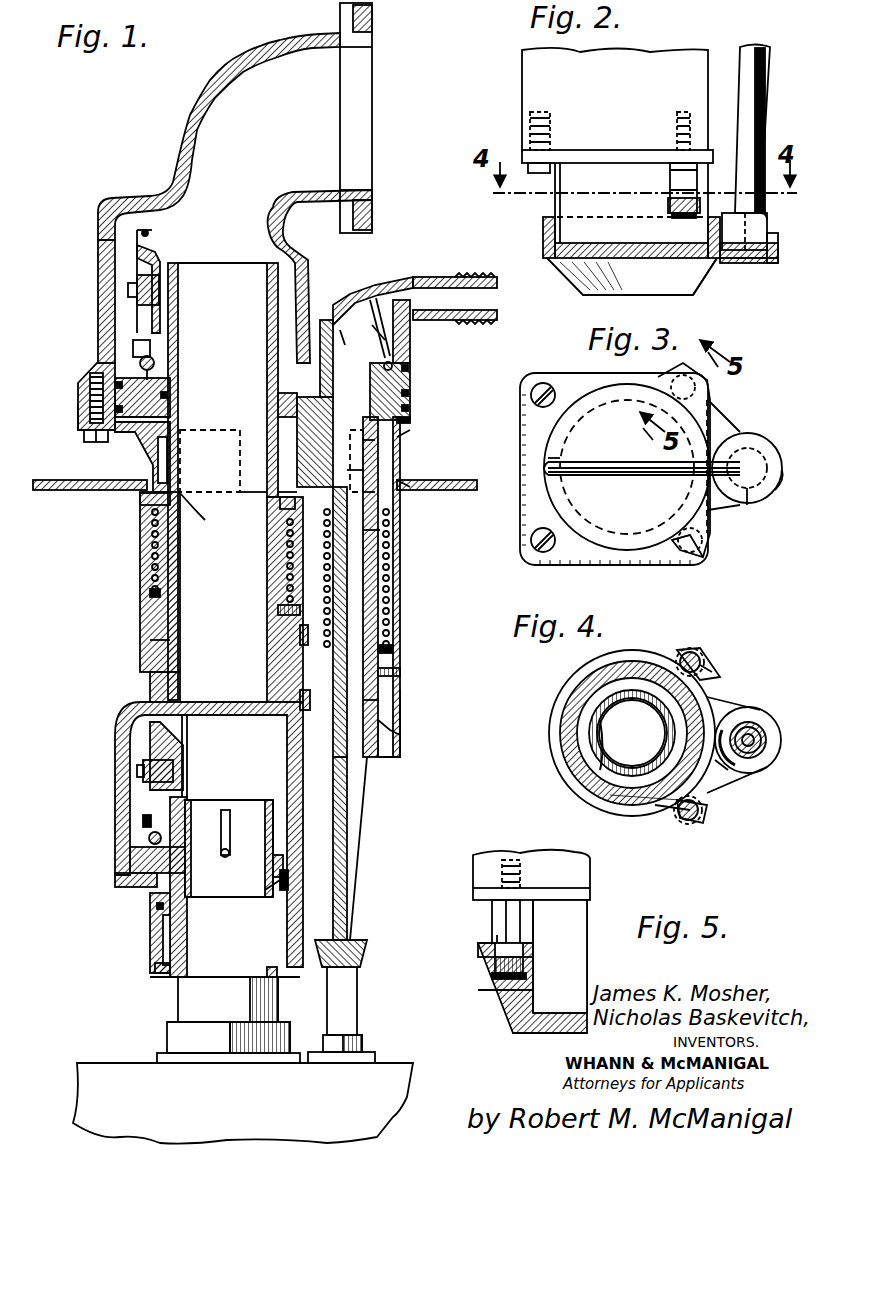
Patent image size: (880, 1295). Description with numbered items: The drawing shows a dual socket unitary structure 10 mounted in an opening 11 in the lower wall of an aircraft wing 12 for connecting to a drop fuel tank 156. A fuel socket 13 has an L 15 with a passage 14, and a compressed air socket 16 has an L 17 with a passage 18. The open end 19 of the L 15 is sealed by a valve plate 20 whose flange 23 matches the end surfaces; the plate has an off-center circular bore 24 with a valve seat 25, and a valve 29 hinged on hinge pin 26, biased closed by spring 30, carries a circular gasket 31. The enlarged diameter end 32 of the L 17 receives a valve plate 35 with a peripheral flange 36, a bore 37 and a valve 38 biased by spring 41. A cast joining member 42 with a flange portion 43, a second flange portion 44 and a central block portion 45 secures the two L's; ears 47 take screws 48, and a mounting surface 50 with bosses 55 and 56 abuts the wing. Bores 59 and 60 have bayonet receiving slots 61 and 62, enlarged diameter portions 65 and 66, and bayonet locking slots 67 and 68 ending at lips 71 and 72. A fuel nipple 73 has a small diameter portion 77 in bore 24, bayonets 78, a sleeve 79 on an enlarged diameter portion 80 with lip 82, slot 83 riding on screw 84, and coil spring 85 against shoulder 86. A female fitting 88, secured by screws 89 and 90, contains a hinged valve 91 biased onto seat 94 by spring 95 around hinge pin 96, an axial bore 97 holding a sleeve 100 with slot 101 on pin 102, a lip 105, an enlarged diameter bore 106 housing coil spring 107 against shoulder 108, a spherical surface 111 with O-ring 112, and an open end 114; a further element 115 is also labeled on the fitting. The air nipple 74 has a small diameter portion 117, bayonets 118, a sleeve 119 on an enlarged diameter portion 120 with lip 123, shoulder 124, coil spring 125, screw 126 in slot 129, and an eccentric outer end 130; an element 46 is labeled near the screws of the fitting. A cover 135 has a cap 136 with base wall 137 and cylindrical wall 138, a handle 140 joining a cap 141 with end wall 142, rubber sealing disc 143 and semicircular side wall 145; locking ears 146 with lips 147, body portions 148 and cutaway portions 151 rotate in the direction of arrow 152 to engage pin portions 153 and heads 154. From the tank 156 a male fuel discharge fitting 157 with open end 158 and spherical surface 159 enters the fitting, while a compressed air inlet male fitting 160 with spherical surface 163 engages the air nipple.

In FIG. 1, the unitary structure 10 is at (365, 258).
In FIG. 1, the opening 11 is at (365, 470).
In FIG. 1, the aircraft wing 12 is at (458, 479).
In FIG. 1, the fuel socket 13 is at (133, 443).
In FIG. 1, the passage 14 is at (363, 110).
In FIG. 1, the L 15 is at (200, 110).
In FIG. 1, the compressed air socket 16 is at (435, 408).
In FIG. 1, the L 17 is at (413, 277).
In FIG. 1, the passage 18 is at (483, 303).
In FIG. 1, the open end 19 is at (83, 380).
In FIG. 1, the valve plate 20 is at (168, 398).
In FIG. 1, the flange 23 is at (88, 393).
In FIG. 1, the circular bore 24 is at (150, 385).
In FIG. 1, the valve seat 25 is at (273, 347).
In FIG. 1, the hinge pin 26 is at (152, 360).
In FIG. 1, the valve 29 is at (163, 267).
In FIG. 1, the spring 30 is at (133, 347).
In FIG. 1, the circular gasket 31 is at (148, 233).
In FIG. 1, the enlarged diameter end 32 is at (408, 368).
In FIG. 1, the valve plate 35 is at (410, 408).
In FIG. 1, the peripheral flange 36 is at (410, 393).
In FIG. 1, the bore 37 is at (388, 362).
In FIG. 1, the valve 38 is at (375, 325).
In FIG. 1, the spring 41 is at (392, 368).
In FIG. 1, the joining member 42 is at (78, 418).
In FIG. 1, the flange portion 43 is at (140, 433).
In FIG. 1, the second flange portion 44 is at (412, 434).
In FIG. 1, the central block portion 45 is at (300, 453).
In FIG. 2, the bolt 46 is at (690, 160).
In FIG. 1, the ears 47 is at (83, 432).
In FIG. 1, the screws 48 is at (92, 443).
In FIG. 1, the mounting surface 50 is at (290, 520).
In FIG. 1, the boss 55 is at (147, 493).
In FIG. 1, the boss 56 is at (392, 487).
In FIG. 1, the cylindrical bore 59 is at (212, 522).
In FIG. 1, the bore 60 is at (400, 537).
In FIG. 1, the bayonet receiving slots 61 is at (250, 493).
In FIG. 1, the bayonet receiving slots 62 is at (367, 463).
In FIG. 1, the enlarged diameter portion 65 is at (195, 430).
In FIG. 1, the enlarged diameter portion 66 is at (410, 419).
In FIG. 1, the bayonet locking slot 67 is at (278, 460).
In FIG. 1, the bayonet locking slot 68 is at (285, 493).
In FIG. 1, the lip 71 is at (167, 467).
In FIG. 1, the lip 72 is at (393, 483).
In FIG. 1, the fuel nipple 73 is at (122, 688).
In FIG. 2, the fuel nipple 73 is at (512, 137).
In FIG. 5, the fuel nipple 73 is at (472, 855).
In FIG. 1, the compressed air nipple 74 is at (407, 707).
In FIG. 2, the compressed air nipple 74 is at (770, 110).
In FIG. 4, the compressed air nipple 74 is at (753, 757).
In FIG. 1, the small diameter portion 77 is at (178, 287).
In FIG. 1, the bayonets 78 is at (170, 438).
In FIG. 1, the sleeve 79 is at (140, 613).
In FIG. 1, the enlarged diameter portion 80 is at (160, 650).
In FIG. 1, the lip 82 is at (282, 505).
In FIG. 1, the slot 83 is at (300, 633).
In FIG. 1, the screw 84 is at (278, 612).
In FIG. 1, the coil spring 85 is at (153, 563).
In FIG. 1, the shoulder 86 is at (150, 592).
In FIG. 1, the female fitting 88 is at (153, 980).
In FIG. 2, the female fitting 88 is at (550, 200).
In FIG. 3, the female fitting 88 is at (570, 563).
In FIG. 4, the female fitting 88 is at (693, 777).
In FIG. 5, the female fitting 88 is at (477, 895).
In FIG. 2, the screws 89 is at (550, 160).
In FIG. 3, the screws 89 is at (533, 553).
In FIG. 2, the screws 90 is at (690, 110).
In FIG. 4, the screws 90 is at (522, 860).
In FIG. 5, the screws 90 is at (522, 883).
In FIG. 1, the hinged valve 91 is at (177, 753).
In FIG. 1, the seat 94 is at (240, 805).
In FIG. 1, the spring 95 is at (143, 823).
In FIG. 1, the hinge pin 96 is at (148, 840).
In FIG. 1, the axial bore 97 is at (180, 848).
In FIG. 1, the sleeve 100 is at (200, 800).
In FIG. 4, the sleeve 100 is at (602, 770).
In FIG. 1, the slot 101 is at (228, 812).
In FIG. 1, the pin 102 is at (222, 853).
In FIG. 1, the lip 105 is at (270, 893).
In FIG. 1, the enlarged diameter bore 106 is at (290, 888).
In FIG. 1, the coil spring 107 is at (150, 880).
In FIG. 4, the coil spring 107 is at (587, 718).
In FIG. 1, the shoulder 108 is at (270, 867).
In FIG. 1, the spherical surface 111 is at (163, 917).
In FIG. 1, the O-ring 112 is at (160, 907).
In FIG. 1, the open end 114 is at (280, 970).
In FIG. 1, the lock ring 115 is at (157, 970).
In FIG. 1, the small diameter portion 117 is at (343, 330).
In FIG. 1, the bayonets 118 is at (378, 441).
In FIG. 1, the sleeve 119 is at (397, 610).
In FIG. 1, the enlarged diameter portion 120 is at (380, 703).
In FIG. 1, the lip 123 is at (347, 493).
In FIG. 1, the shoulder 124 is at (397, 647).
In FIG. 1, the coil spring 125 is at (393, 587).
In FIG. 1, the screw 126 is at (400, 673).
In FIG. 1, the slot 129 is at (398, 732).
In FIG. 2, the outer end 130 is at (762, 220).
In FIG. 4, the outer end 130 is at (762, 747).
In FIG. 2, the cover 135 is at (703, 287).
In FIG. 3, the cover 135 is at (742, 420).
In FIG. 4, the cover 135 is at (743, 698).
In FIG. 5, the cover 135 is at (493, 1007).
In FIG. 2, the cap 136 is at (567, 263).
In FIG. 3, the cap 136 is at (623, 517).
In FIG. 4, the cap 136 is at (613, 663).
In FIG. 2, the base wall 137 is at (610, 240).
In FIG. 4, the base wall 137 is at (647, 743).
In FIG. 2, the cylindrical wall 138 is at (547, 227).
In FIG. 3, the cylindrical wall 138 is at (593, 400).
In FIG. 4, the cylindrical wall 138 is at (593, 813).
In FIG. 5, the cylindrical wall 138 is at (530, 985).
In FIG. 2, the handle 140 is at (640, 283).
In FIG. 3, the handle 140 is at (640, 467).
In FIG. 2, the cap 141 is at (753, 265).
In FIG. 3, the cap 141 is at (773, 453).
In FIG. 4, the cap 141 is at (763, 710).
In FIG. 2, the end wall 142 is at (737, 263).
In FIG. 3, the end wall 142 is at (748, 495).
In FIG. 2, the rubber sealing disc 143 is at (733, 260).
In FIG. 2, the semicircular side wall 145 is at (778, 250).
In FIG. 3, the semicircular side wall 145 is at (778, 487).
In FIG. 3, the locking ears 146 is at (713, 553).
In FIG. 4, the locking ears 146 is at (713, 660).
In FIG. 5, the locking ears 146 is at (500, 950).
In FIG. 4, the lip 147 is at (673, 830).
In FIG. 5, the lip 147 is at (497, 943).
In FIG. 5, the body portion 148 is at (493, 990).
In FIG. 4, the cutaway portions 151 is at (713, 670).
In FIG. 5, the cutaway portions 151 is at (517, 948).
In FIG. 3, the arrow 152 is at (545, 453).
In FIG. 2, the pin portion 153 is at (678, 195).
In FIG. 4, the pin portion 153 is at (692, 655).
In FIG. 5, the pin portion 153 is at (497, 965).
In FIG. 2, the head 154 is at (677, 215).
In FIG. 3, the head 154 is at (707, 387).
In FIG. 4, the head 154 is at (683, 655).
In FIG. 5, the head 154 is at (497, 978).
In FIG. 1, the drop fuel tank 156 is at (117, 1130).
In FIG. 1, the male fuel discharge fitting 157 is at (200, 1003).
In FIG. 1, the open end 158 is at (228, 880).
In FIG. 1, the spherical-shaped surface 159 is at (166, 930).
In FIG. 1, the compressed air inlet male fitting 160 is at (343, 1008).
In FIG. 1, the spherical sealably engaging surface 163 is at (360, 957).